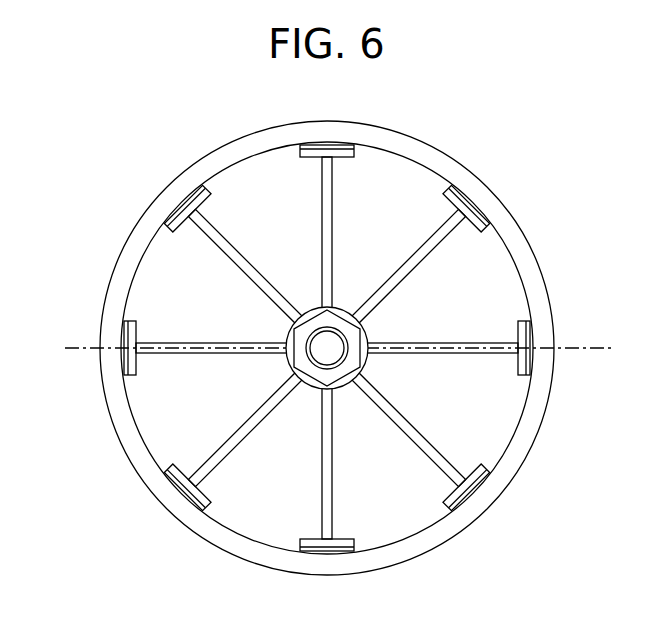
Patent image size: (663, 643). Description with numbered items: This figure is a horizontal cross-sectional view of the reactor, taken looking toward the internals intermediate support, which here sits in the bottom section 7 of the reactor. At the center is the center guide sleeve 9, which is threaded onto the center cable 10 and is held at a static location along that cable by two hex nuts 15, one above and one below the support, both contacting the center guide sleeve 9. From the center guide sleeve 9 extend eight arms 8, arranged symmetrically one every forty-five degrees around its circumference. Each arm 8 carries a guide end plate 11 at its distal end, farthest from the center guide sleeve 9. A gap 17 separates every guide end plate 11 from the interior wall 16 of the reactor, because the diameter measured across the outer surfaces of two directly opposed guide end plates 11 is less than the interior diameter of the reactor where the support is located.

The bottom section 7 is at (335, 348).
The arm 8 is at (228, 237).
The center guide sleeve 9 is at (372, 362).
The center cable 10 is at (323, 358).
The guide end plate 11 is at (492, 228).
The hex nut 15 is at (345, 337).
The interior wall 16 is at (140, 430).
The gap 17 is at (483, 222).